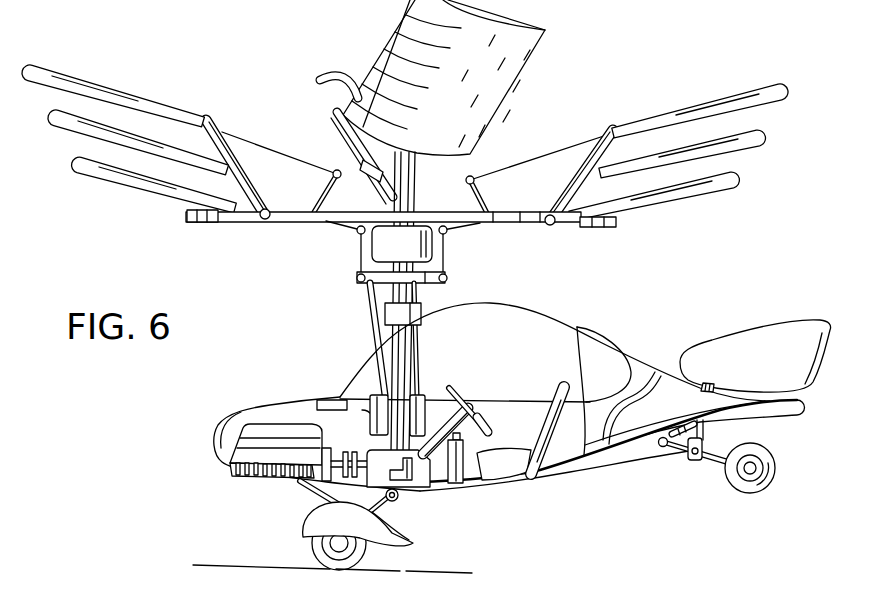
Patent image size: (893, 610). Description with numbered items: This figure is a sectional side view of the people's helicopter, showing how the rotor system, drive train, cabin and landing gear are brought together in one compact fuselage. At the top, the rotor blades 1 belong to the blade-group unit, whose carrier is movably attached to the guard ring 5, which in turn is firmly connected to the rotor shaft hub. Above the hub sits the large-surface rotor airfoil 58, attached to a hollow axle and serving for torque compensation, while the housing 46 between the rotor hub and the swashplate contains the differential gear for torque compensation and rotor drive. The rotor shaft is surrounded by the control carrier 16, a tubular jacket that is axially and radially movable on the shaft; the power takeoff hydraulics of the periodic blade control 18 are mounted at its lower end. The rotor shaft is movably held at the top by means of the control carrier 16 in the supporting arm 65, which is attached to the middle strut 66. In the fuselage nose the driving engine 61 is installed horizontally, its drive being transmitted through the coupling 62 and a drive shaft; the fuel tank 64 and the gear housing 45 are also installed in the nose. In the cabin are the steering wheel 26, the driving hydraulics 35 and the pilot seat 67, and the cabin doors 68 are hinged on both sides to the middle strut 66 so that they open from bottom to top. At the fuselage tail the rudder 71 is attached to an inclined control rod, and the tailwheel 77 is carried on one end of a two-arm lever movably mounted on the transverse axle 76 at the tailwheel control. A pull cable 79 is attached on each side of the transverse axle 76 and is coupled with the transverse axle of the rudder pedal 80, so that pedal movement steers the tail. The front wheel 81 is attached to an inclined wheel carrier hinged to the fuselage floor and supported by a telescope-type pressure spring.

The blades 1 is at (735, 183).
The guard ring 5 is at (617, 223).
The control carrier 16 is at (411, 368).
The power takeoff hydraulics of the periodic blade control 18 is at (375, 398).
The steering wheel 26 is at (458, 397).
The driving hydraulics 35 is at (463, 470).
The gear housing 45 is at (418, 478).
The housing 46 is at (383, 249).
The large-surface rotor airfoil 58 is at (513, 62).
The driving engine 61 is at (258, 455).
The coupling 62 is at (310, 490).
The fuel tank 64 is at (358, 438).
The supporting arm 65 is at (423, 307).
The middle strut 66 is at (540, 312).
The pilot seat 67 is at (507, 467).
The cabin doors 68 is at (585, 350).
The rudder 71 is at (775, 328).
The transverse axle 76 is at (693, 462).
The tailwheel 77 is at (777, 470).
The pull cable 79 is at (617, 470).
The rudder pedal 80 is at (396, 499).
The front wheel 81 is at (318, 548).